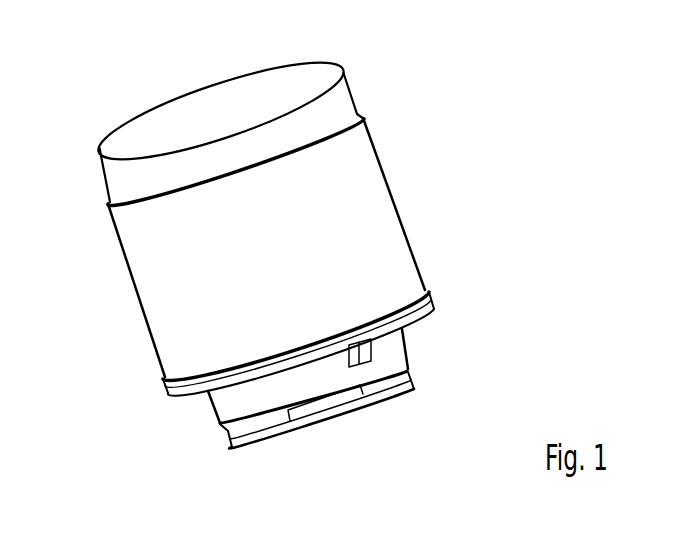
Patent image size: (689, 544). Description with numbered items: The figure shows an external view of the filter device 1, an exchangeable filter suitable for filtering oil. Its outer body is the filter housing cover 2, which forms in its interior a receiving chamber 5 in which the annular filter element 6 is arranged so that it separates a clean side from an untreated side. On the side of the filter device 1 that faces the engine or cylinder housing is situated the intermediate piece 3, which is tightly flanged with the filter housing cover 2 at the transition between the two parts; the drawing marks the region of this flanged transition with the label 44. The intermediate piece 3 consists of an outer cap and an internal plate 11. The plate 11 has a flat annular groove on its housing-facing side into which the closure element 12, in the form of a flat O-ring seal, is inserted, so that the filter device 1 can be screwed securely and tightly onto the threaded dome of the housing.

The filter device 1 is at (447, 97).
The filter housing cover 2 is at (380, 209).
The intermediate piece 3 is at (420, 343).
The receiving chamber 5 is at (196, 191).
The annular filter element 6 is at (223, 123).
The plate 11 is at (260, 424).
The closure element 12 is at (383, 407).
The flange 44 is at (424, 313).